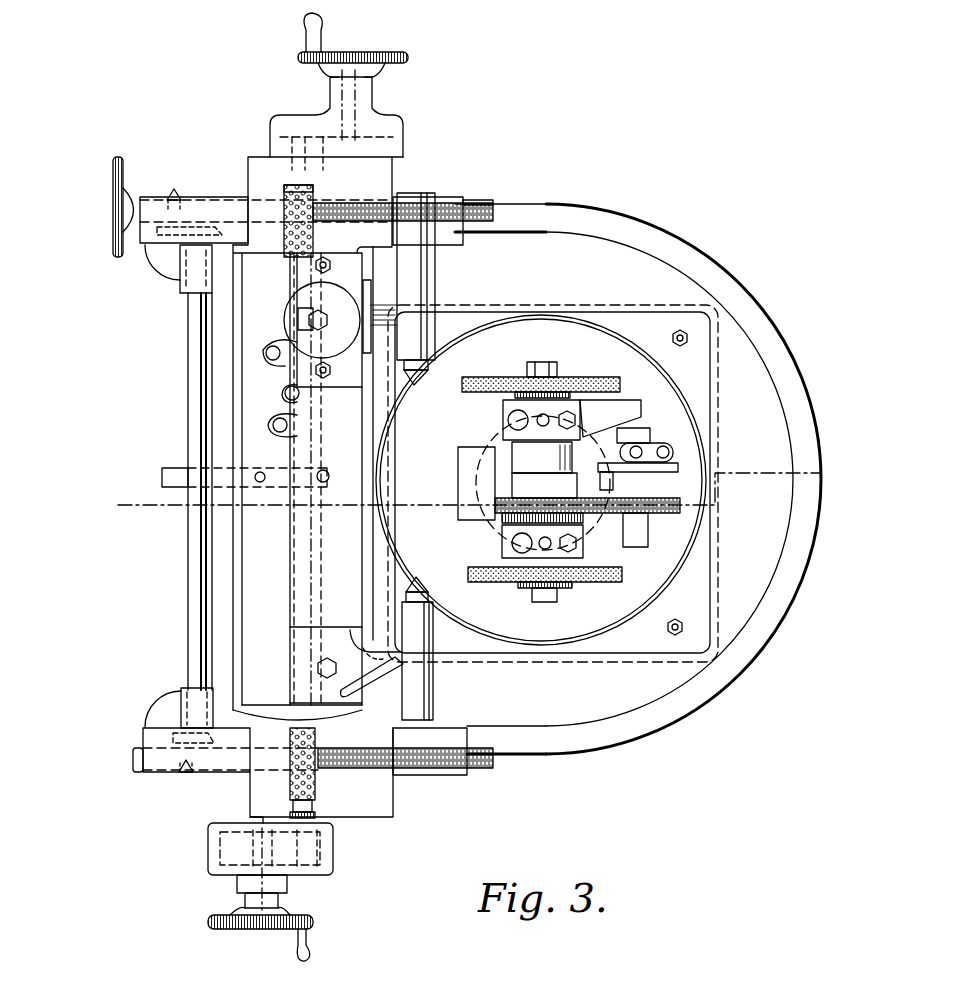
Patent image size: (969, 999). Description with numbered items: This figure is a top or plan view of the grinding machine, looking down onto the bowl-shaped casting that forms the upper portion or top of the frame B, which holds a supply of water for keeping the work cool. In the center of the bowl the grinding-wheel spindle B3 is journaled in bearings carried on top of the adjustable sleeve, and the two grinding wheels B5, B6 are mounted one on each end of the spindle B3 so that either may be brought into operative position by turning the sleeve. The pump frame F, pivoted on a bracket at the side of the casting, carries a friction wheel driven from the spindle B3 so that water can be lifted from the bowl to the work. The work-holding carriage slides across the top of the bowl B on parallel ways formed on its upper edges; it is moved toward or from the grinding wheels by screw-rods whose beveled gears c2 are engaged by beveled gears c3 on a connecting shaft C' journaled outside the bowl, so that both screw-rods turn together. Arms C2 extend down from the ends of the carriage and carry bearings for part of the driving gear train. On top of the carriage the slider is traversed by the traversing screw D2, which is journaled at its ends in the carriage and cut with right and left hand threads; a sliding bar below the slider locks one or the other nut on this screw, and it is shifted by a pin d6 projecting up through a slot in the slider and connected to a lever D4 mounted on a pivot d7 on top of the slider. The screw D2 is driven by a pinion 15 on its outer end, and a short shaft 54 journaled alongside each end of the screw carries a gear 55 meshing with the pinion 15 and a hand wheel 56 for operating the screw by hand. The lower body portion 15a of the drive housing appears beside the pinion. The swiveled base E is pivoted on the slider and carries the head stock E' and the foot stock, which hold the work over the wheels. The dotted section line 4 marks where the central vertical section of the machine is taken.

The upper portion or top of the frame B is at (738, 645).
The grinding-wheel spindle B3 is at (550, 433).
The grinding wheel B5 is at (497, 526).
The grinding wheel B6 is at (497, 383).
The pump frame F is at (569, 483).
The swiveled base E is at (303, 482).
The head stock E' is at (404, 484).
The traversing screw D2 is at (315, 200).
The lever D4 is at (178, 466).
The pin d6 is at (328, 471).
The pivot d7 is at (270, 466).
The shaft C' is at (179, 486).
The arms C2 is at (118, 204).
The beveled gears c2 is at (176, 198).
The beveled gears c3 is at (165, 250).
The pinion 15 is at (282, 142).
The lower body 15a is at (302, 838).
The short shaft 54 is at (350, 101).
The gear 55 is at (375, 144).
The hand wheel 56 is at (233, 938).
The section line 4 is at (470, 492).